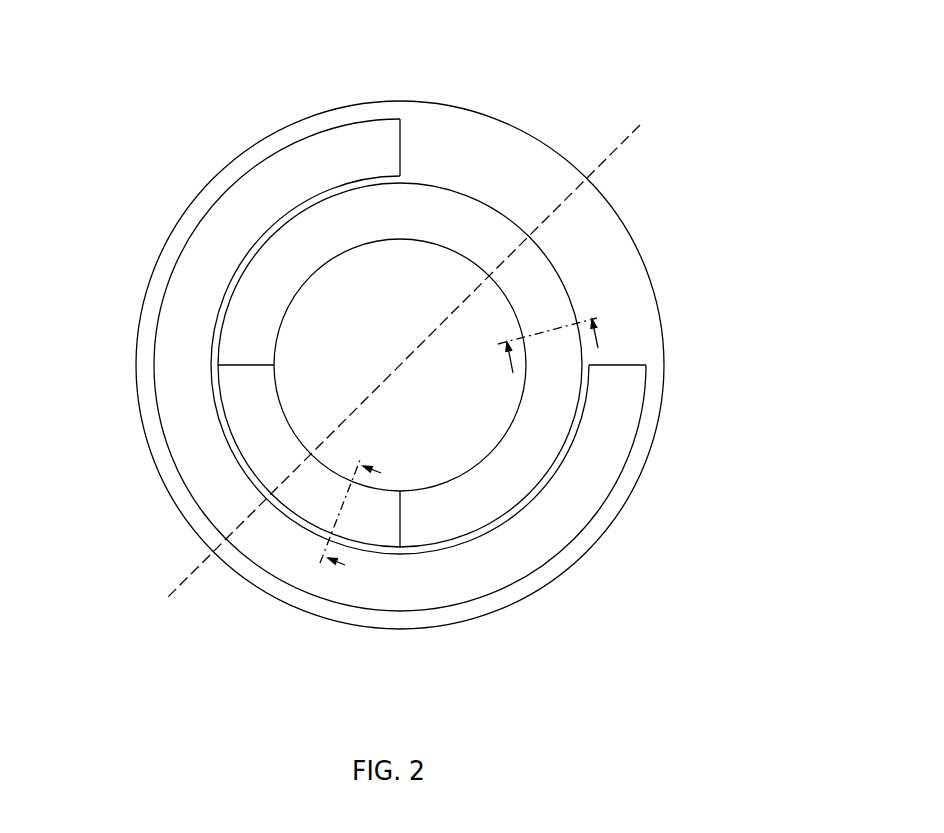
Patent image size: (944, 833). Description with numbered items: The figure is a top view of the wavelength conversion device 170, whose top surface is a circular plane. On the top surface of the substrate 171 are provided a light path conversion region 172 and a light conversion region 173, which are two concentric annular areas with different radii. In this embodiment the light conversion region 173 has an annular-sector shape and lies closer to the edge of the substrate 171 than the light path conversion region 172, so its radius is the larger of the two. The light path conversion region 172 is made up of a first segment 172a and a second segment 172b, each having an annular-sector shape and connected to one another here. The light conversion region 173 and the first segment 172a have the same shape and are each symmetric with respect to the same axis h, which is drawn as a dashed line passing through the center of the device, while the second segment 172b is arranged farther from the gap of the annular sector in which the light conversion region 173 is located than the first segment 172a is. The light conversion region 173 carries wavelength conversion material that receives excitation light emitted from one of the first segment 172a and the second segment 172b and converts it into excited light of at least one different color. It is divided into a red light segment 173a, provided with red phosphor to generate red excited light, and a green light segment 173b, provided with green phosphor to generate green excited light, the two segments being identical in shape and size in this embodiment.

The wavelength conversion device 170 is at (399, 354).
The substrate 171 is at (592, 248).
The light path conversion region 172 is at (523, 463).
The first segment 172a is at (482, 236).
The second segment 172b is at (308, 500).
The light conversion region 173 is at (205, 459).
The red light segment 173a is at (427, 588).
The green light segment 173b is at (182, 348).
The axis h is at (602, 163).